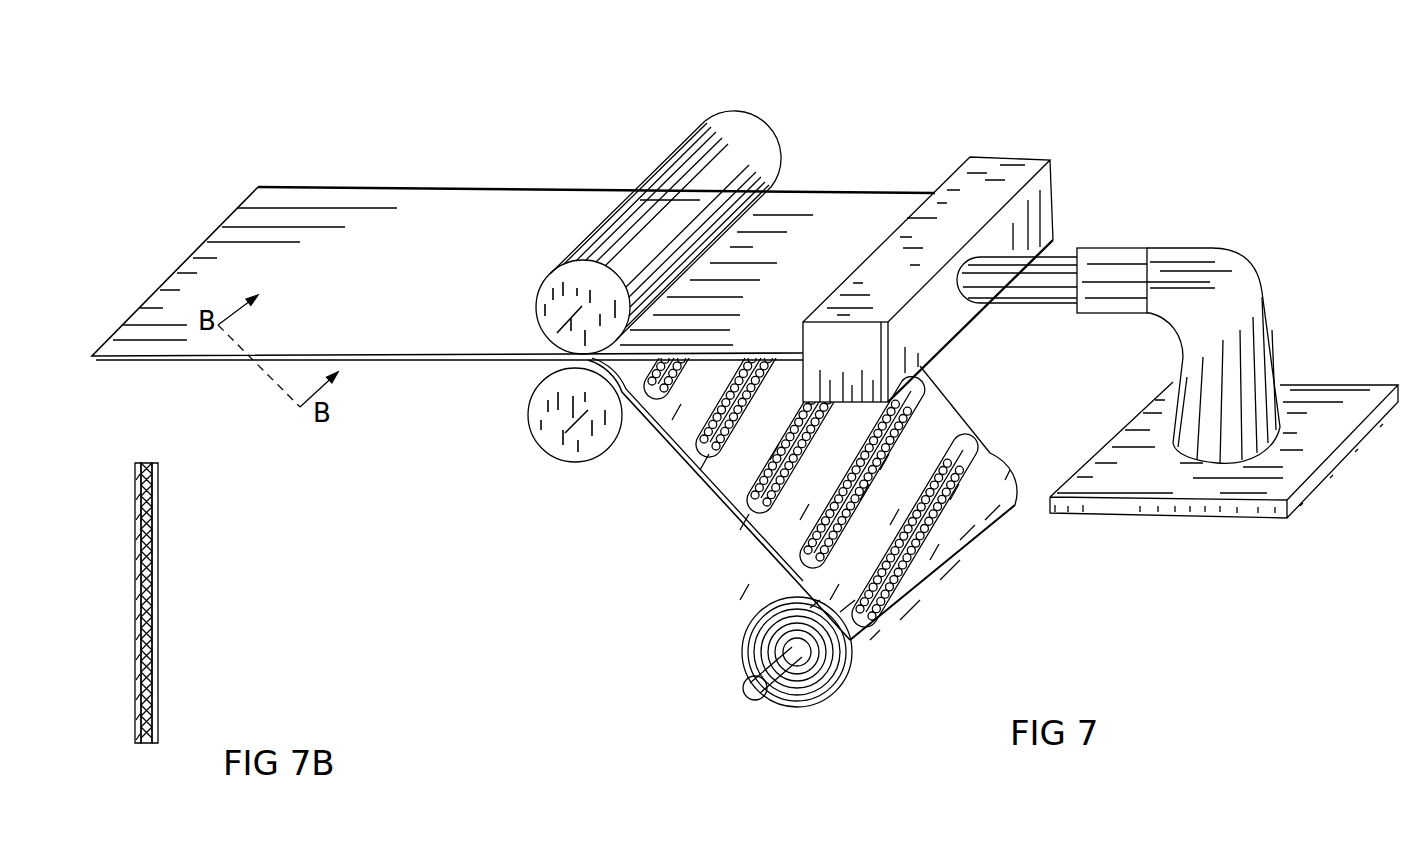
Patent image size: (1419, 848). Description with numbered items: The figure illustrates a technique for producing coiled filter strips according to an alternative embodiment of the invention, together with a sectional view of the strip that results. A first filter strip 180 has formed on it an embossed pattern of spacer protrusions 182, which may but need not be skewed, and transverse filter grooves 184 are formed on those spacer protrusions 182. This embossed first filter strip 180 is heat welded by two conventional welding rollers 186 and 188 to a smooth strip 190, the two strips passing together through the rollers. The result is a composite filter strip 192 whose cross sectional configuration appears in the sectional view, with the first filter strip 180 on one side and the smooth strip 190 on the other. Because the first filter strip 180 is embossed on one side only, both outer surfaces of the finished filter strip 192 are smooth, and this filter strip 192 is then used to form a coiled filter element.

In FIG. 7, the first filter strip 180 is at (717, 492).
In FIG. 7B, the first filter strip 180 is at (135, 643).
In FIG. 7, the spacer protrusions 182 is at (987, 442).
In FIG. 7, the transverse filter grooves 184 is at (795, 578).
In FIG. 7, the welding roller 186 is at (757, 113).
In FIG. 7, the welding roller 188 is at (572, 453).
In FIG. 7, the smooth strip 190 is at (868, 197).
In FIG. 7B, the smooth strip 190 is at (158, 628).
In FIG. 7, the filter strip 192 is at (503, 193).
In FIG. 7B, the filter strip 192 is at (160, 668).